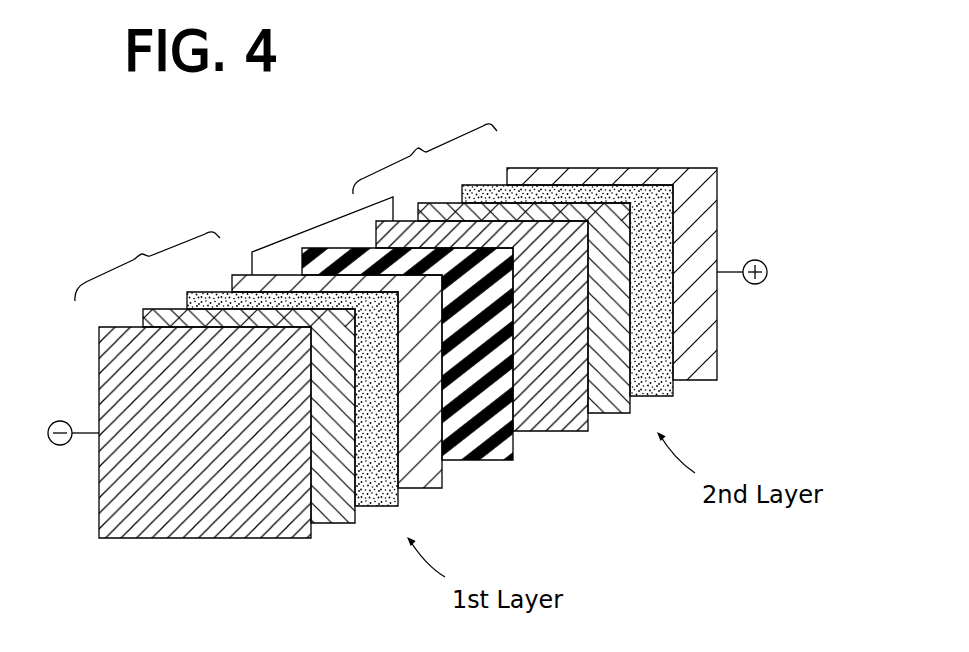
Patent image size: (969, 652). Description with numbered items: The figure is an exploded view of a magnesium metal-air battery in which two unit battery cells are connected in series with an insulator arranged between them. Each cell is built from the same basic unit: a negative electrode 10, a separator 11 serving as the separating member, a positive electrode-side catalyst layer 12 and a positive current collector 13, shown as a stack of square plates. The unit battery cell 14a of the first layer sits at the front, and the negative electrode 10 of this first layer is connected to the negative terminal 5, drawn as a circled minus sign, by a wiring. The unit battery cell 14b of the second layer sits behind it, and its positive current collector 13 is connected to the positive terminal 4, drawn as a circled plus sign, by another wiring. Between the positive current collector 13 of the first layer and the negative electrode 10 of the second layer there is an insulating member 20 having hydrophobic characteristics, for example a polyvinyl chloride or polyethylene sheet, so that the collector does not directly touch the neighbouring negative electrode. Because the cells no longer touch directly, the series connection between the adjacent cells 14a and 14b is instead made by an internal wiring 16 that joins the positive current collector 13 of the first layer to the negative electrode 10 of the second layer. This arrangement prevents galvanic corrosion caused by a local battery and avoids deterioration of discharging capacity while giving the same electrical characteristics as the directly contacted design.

The positive terminal 4 is at (764, 263).
The negative terminal 5 is at (52, 424).
The negative electrode 10 is at (290, 539).
The separator 11 is at (343, 524).
The positive electrode-side catalyst layer 12 is at (398, 501).
The positive current collector 13 is at (436, 470).
The unit battery cell of the first layer 14a is at (147, 258).
The unit battery cell of the second layer 14b is at (425, 151).
The internal wiring 16 is at (303, 232).
The insulating member 20 is at (498, 460).